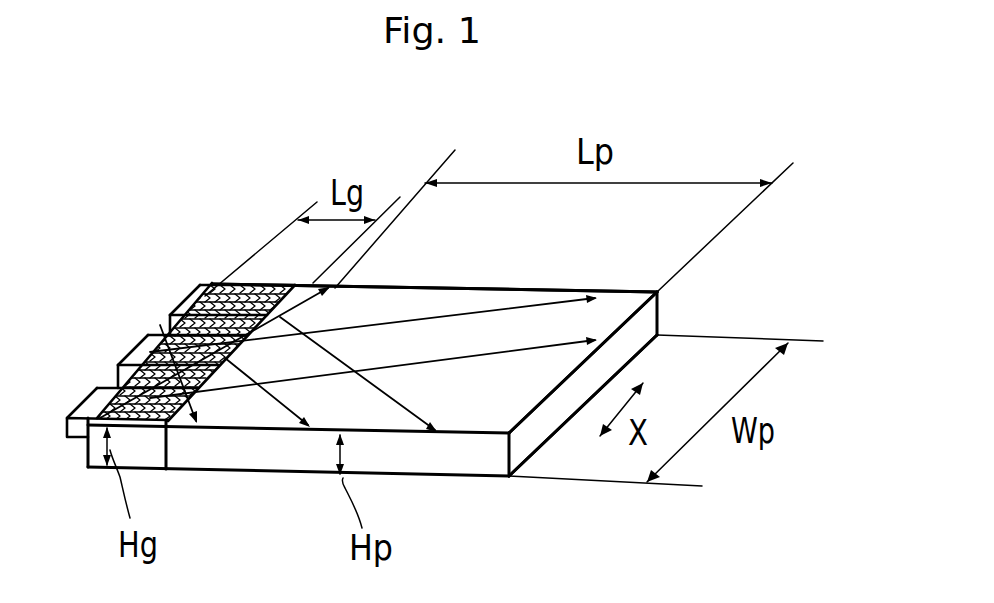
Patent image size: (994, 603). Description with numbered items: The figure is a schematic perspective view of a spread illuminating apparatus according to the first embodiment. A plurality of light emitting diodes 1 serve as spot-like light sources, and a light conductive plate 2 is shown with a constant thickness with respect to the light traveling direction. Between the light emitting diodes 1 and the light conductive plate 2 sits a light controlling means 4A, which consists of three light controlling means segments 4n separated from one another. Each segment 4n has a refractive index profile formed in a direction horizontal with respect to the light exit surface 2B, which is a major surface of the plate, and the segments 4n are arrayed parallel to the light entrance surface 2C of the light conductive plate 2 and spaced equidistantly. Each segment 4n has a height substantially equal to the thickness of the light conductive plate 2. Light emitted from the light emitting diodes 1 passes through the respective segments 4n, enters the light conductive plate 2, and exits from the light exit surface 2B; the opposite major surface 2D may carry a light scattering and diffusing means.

The light emitting diode 1 is at (186, 313).
The light conductive plate 2 is at (537, 284).
The light exit surface 2B is at (454, 328).
The light entrance surface 2C is at (168, 446).
The major surface 2D is at (468, 478).
The light controlling means 4A is at (176, 229).
The light controlling means segment 4n is at (180, 405).